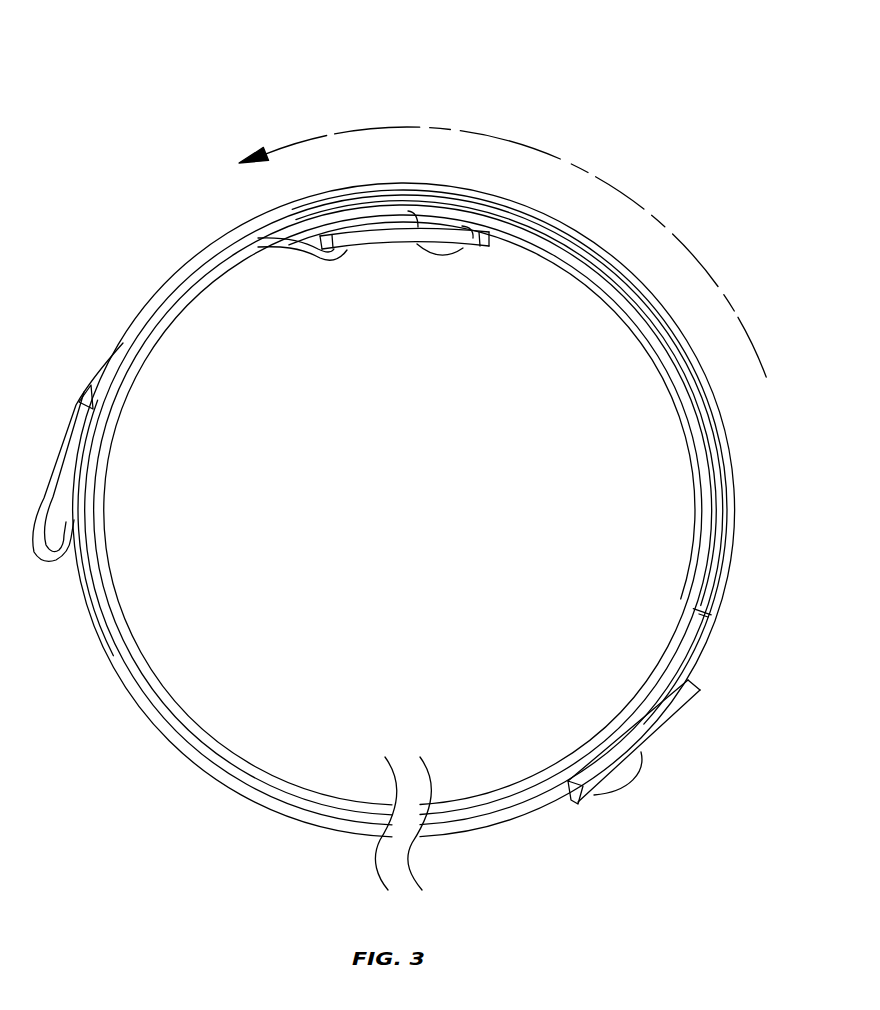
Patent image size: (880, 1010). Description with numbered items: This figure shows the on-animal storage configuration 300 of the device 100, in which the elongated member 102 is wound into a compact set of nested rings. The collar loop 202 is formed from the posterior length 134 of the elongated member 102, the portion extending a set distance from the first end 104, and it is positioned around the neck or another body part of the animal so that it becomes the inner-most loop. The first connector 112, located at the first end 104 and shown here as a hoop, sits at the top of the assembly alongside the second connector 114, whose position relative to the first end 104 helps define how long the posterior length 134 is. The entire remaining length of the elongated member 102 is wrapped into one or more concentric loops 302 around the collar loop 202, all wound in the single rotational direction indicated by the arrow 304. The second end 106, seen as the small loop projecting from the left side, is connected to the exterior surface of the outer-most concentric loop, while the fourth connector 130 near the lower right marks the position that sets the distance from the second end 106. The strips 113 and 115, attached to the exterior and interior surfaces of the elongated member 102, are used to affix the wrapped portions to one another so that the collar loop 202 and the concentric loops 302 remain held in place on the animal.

The on-animal storage configuration 300 is at (158, 48).
The device 100 is at (160, 209).
The elongated member 102 is at (156, 726).
The first end 104 is at (352, 250).
The second end 106 is at (52, 563).
The first connector 112 is at (330, 262).
The strip 113 is at (718, 586).
The second connector 114 is at (400, 240).
The strip 115 is at (720, 546).
The fourth connector 130 is at (683, 708).
The posterior length 134 is at (263, 777).
The collar loop 202 is at (692, 465).
The concentric loops 302 is at (698, 628).
The arrow 304 is at (700, 267).